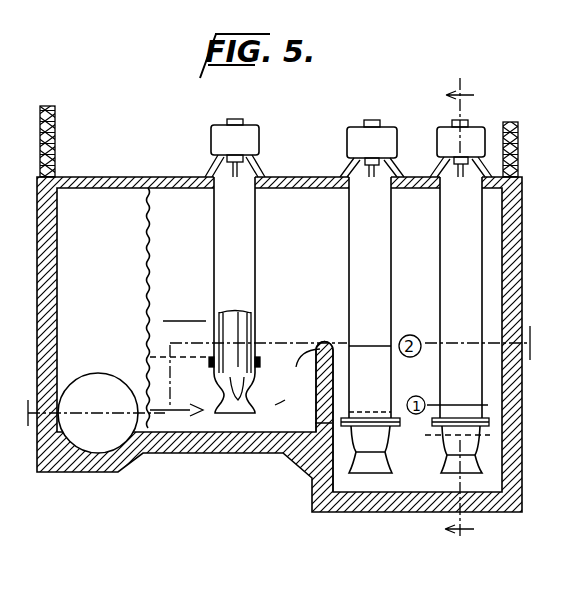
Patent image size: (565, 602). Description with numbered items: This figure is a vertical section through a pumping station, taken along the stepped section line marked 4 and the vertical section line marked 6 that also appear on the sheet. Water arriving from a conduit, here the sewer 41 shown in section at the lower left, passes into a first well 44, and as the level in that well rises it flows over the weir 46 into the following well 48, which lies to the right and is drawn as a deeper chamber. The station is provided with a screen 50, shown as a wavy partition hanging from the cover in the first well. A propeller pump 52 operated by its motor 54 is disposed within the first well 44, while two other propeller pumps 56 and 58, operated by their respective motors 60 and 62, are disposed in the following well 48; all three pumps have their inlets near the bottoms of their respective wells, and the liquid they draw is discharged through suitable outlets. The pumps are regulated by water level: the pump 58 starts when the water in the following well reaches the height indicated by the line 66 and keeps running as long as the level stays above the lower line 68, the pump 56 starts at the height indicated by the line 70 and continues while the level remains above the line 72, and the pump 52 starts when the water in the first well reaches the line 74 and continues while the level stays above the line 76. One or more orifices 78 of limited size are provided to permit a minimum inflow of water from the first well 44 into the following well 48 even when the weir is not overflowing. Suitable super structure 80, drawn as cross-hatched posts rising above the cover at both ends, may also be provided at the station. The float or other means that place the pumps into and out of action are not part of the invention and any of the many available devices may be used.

The section line 4- 4 is at (286, 388).
The section line 6- 6 is at (460, 314).
The sewer 41 is at (92, 432).
The first well 44 is at (262, 422).
The weir 46 is at (235, 382).
The following well 48 is at (410, 490).
The screen 50 is at (146, 282).
The propeller pump 52 is at (231, 406).
The motor 54 is at (250, 132).
The propeller pump 56 is at (366, 463).
The propeller pump 58 is at (482, 442).
The motor 60 is at (386, 137).
The motor 62 is at (475, 135).
The line 66 is at (450, 404).
The line 68 is at (396, 474).
The line 70 is at (375, 339).
The line 72 is at (366, 411).
The line 74 is at (192, 321).
The line 76 is at (183, 357).
The orifices 78 is at (303, 443).
The super structure 80 is at (57, 133).